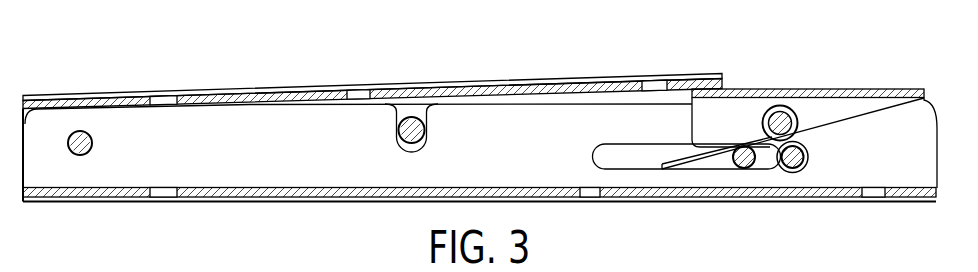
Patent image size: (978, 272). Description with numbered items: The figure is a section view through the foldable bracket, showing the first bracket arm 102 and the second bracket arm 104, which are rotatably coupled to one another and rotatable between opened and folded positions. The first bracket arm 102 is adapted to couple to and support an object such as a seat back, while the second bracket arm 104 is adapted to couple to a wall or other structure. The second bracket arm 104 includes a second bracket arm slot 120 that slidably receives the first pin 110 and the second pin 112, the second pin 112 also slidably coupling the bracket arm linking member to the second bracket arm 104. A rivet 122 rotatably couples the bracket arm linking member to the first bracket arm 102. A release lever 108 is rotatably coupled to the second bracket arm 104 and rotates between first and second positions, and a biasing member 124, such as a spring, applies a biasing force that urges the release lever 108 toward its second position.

The first bracket arm 102 is at (592, 82).
The second bracket arm 104 is at (185, 175).
The release lever 108 is at (870, 107).
The first pin 110 is at (790, 167).
The second pin 112 is at (742, 167).
The second bracket arm slot 120 is at (633, 170).
The rivet 122 is at (421, 132).
The biasing member 124 is at (700, 155).